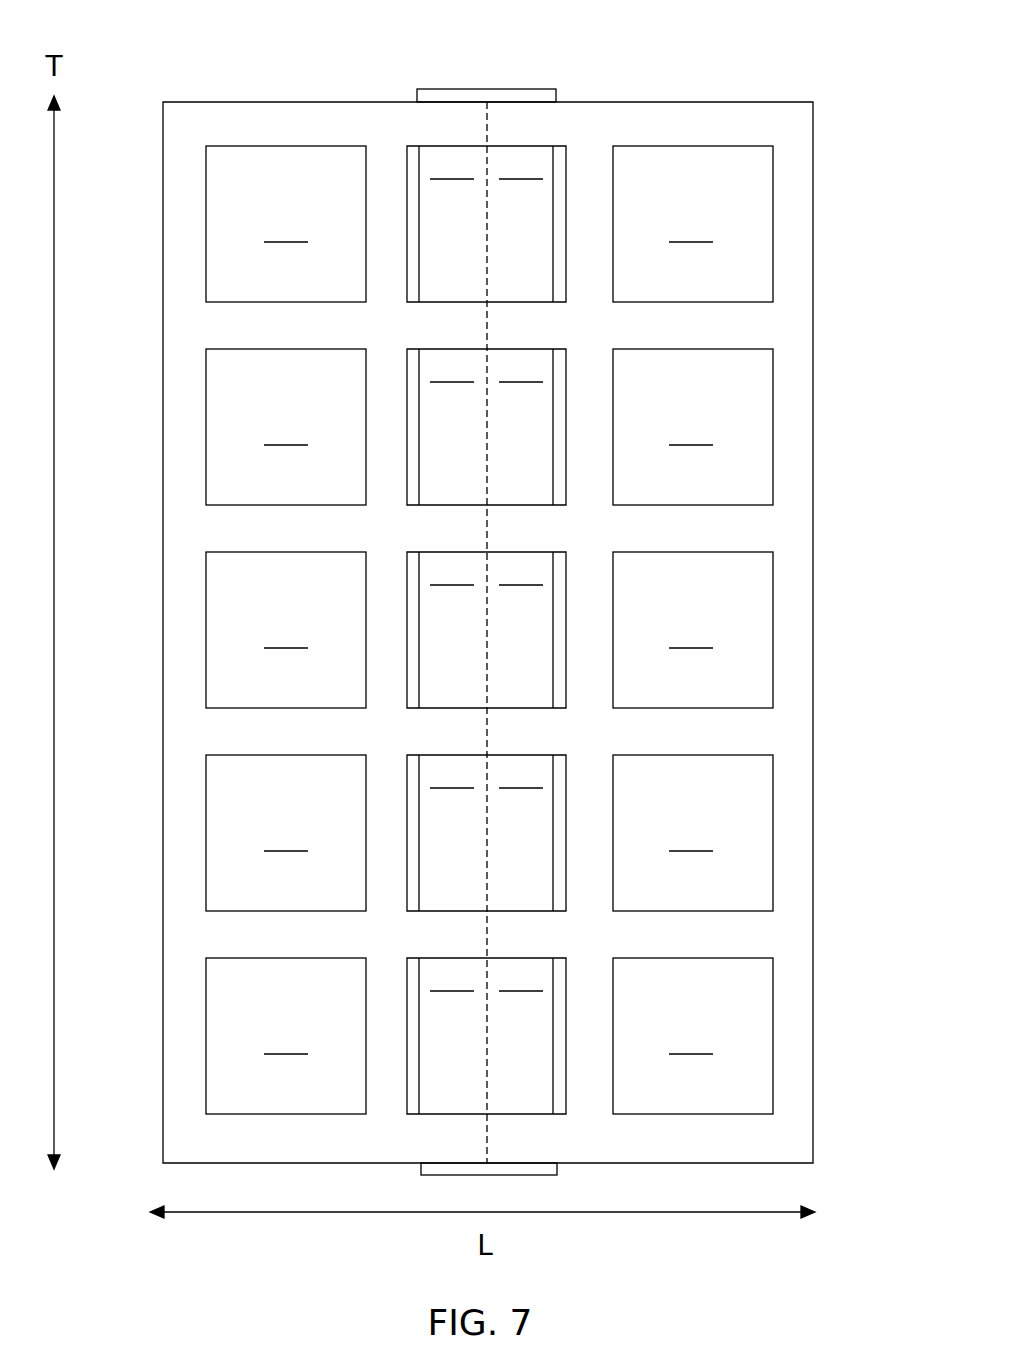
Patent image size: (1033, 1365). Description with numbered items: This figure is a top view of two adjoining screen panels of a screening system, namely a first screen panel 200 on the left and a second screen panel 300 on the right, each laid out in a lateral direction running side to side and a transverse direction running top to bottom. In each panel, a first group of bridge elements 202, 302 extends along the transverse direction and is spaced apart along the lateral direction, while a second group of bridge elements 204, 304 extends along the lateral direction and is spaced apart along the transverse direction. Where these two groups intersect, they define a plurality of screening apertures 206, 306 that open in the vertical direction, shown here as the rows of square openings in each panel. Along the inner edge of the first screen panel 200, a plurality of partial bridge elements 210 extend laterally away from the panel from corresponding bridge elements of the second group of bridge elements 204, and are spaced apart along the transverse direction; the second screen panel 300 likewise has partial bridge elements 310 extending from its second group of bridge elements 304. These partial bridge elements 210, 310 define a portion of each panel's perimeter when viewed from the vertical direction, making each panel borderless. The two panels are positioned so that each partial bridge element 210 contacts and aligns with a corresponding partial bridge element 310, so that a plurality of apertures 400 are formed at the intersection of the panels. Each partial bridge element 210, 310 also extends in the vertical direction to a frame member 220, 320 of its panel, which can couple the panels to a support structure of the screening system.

The first screen panel 200 is at (263, 92).
The first group of bridge elements 202 is at (393, 185).
The second group of bridge elements 204 is at (298, 333).
The screening apertures 206 is at (286, 630).
The partial bridge elements 210 is at (442, 123).
The frame member 220 is at (447, 630).
The second screen panel 300 is at (766, 93).
The first group of bridge elements 302 is at (590, 180).
The second group of bridge elements 304 is at (680, 332).
The screening apertures 306 is at (693, 630).
The partial bridge elements 310 is at (537, 123).
The frame member 320 is at (525, 630).
The apertures 400 is at (543, 309).